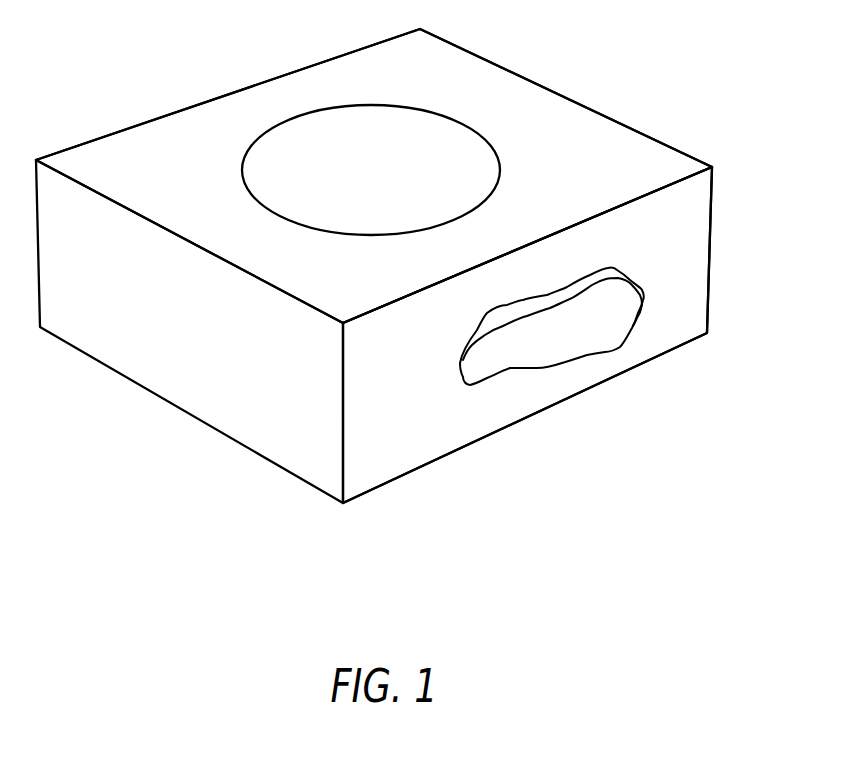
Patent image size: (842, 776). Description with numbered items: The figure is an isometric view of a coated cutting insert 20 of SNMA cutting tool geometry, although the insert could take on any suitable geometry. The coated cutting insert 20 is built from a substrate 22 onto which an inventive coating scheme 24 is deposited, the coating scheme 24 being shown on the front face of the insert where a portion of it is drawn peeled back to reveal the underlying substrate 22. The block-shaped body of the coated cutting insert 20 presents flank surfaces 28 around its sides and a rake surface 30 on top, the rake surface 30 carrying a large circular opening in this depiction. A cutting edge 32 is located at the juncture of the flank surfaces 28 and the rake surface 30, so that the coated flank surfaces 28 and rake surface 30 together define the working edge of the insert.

The coated cutting insert 20 is at (374, 275).
The substrate 22 is at (607, 323).
The coating scheme 24 is at (620, 273).
The flank surfaces 28 is at (425, 435).
The rake surface 30 is at (588, 142).
The cutting edge 32 is at (648, 192).